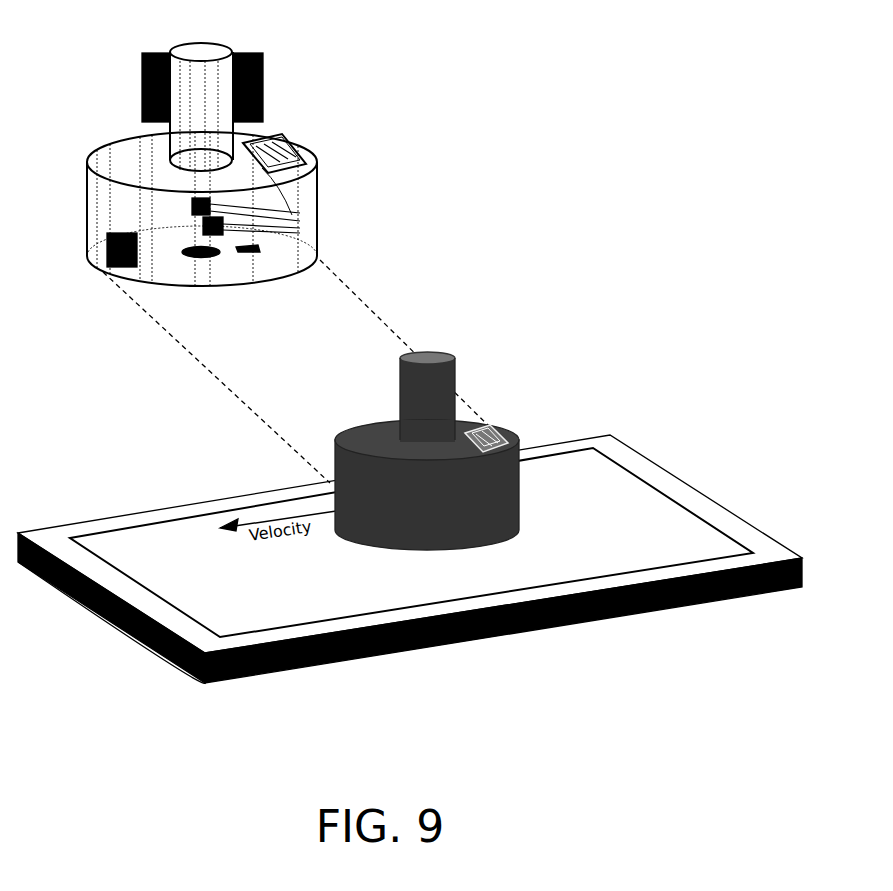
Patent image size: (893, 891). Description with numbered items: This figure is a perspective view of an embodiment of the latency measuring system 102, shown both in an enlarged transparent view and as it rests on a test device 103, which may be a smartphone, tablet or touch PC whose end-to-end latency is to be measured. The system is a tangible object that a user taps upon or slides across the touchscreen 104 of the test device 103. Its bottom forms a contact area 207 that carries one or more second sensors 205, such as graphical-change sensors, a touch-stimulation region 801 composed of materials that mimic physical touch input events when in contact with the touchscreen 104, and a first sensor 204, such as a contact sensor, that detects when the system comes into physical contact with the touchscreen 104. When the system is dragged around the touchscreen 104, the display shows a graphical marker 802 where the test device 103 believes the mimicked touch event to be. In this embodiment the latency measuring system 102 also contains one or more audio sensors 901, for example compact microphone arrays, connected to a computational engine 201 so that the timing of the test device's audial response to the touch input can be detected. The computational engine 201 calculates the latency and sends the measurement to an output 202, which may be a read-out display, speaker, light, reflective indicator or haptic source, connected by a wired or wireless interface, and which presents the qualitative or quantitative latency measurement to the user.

The latency measuring system 102 is at (200, 48).
The test device 103 is at (414, 559).
The touchscreen 104 is at (411, 542).
The computational engine 201 is at (255, 224).
The output 202 is at (298, 152).
The first sensor 204 is at (122, 236).
The second sensors 205 is at (189, 216).
The contact area 207 is at (202, 218).
The touch-stimulation region 801 is at (201, 264).
The graphical marker 802 is at (251, 259).
The audio sensors 901 is at (200, 87).